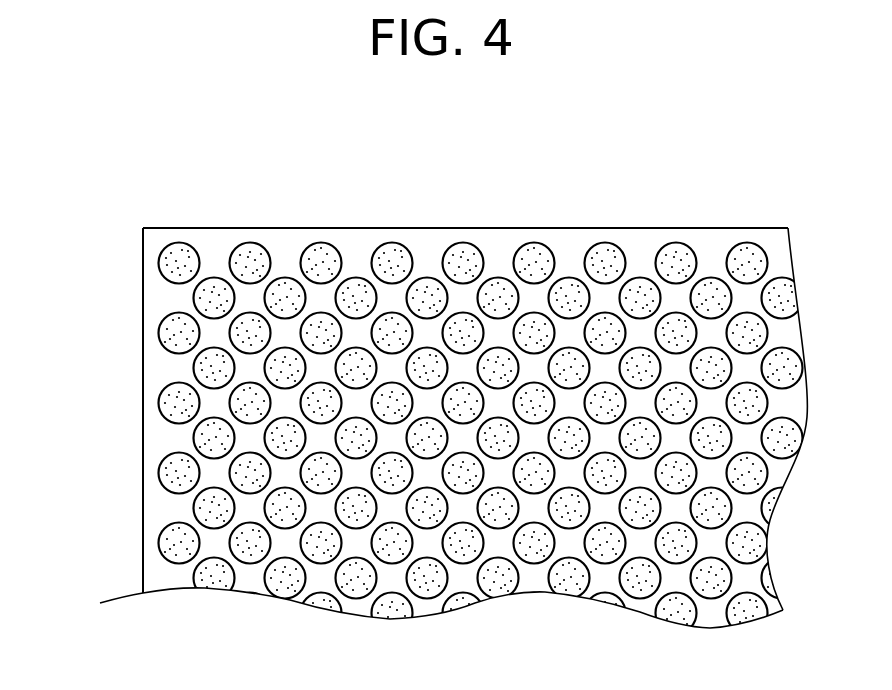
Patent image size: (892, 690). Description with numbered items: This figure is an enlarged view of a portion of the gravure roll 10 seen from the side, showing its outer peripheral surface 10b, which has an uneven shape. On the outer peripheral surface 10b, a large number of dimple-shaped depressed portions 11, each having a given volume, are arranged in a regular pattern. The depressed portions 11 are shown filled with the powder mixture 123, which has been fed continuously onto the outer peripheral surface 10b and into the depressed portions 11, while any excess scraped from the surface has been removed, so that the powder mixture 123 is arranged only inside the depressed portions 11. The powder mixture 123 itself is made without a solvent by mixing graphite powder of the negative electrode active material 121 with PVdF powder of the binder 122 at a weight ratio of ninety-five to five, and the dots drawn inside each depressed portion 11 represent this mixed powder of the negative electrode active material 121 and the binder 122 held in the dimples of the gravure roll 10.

The gravure roll 10 is at (142, 401).
The outer peripheral surface 10b is at (444, 228).
The depressed portions 11 is at (177, 260).
The negative electrode active material 121 is at (240, 207).
The binder 122 is at (184, 262).
The powder mixture 123 is at (240, 191).